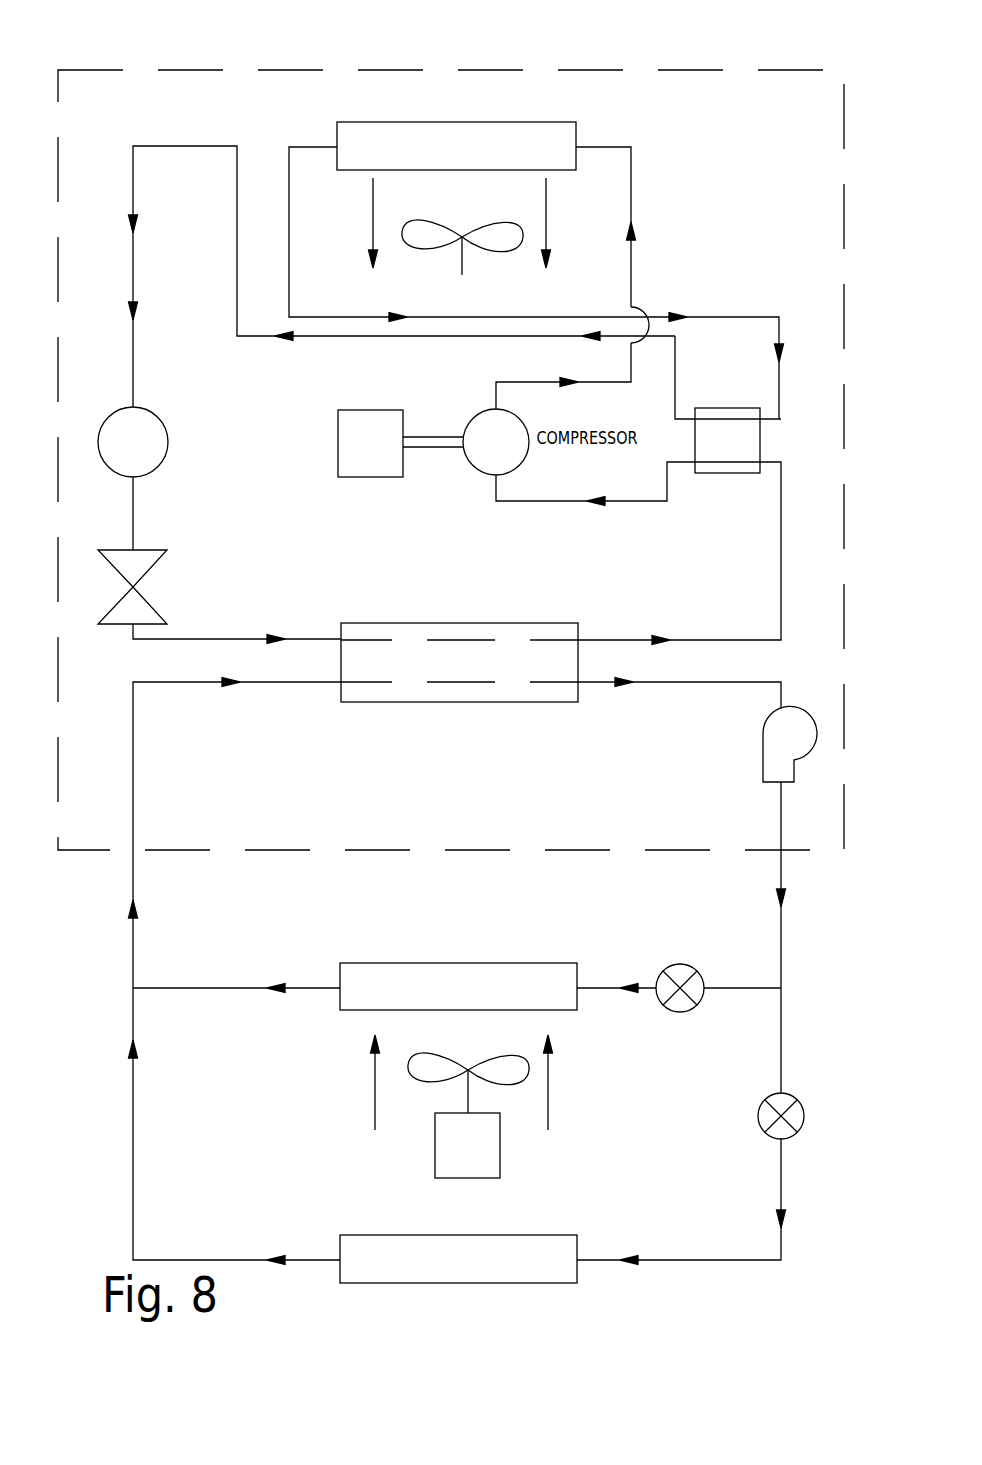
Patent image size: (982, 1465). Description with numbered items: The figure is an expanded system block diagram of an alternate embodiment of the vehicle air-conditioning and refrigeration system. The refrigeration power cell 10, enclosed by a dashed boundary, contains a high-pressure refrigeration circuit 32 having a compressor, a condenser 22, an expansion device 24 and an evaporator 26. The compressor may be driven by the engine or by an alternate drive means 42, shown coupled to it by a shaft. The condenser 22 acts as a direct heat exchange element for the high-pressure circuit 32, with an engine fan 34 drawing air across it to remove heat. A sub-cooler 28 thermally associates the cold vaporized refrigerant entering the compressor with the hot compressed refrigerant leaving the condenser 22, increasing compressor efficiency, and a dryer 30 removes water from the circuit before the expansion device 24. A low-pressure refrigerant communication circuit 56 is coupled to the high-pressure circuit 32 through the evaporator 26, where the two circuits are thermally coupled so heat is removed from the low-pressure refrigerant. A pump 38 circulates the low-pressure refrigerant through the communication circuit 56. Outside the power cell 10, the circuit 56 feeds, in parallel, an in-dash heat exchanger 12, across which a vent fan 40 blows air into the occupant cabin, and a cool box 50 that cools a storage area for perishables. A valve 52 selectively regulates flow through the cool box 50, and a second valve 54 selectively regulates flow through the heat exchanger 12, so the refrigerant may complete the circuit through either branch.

The refrigeration power cell 10 is at (228, 70).
The heat exchanger 12 is at (565, 963).
The condenser 22 is at (577, 140).
The expansion device 24 is at (153, 550).
The evaporator 26 is at (542, 623).
The sub-cooler 28 is at (726, 408).
The dryer 30 is at (150, 412).
The high-pressure refrigeration circuit 32 is at (182, 133).
The engine fan 34 is at (507, 242).
The pump 38 is at (764, 758).
The vent fan 40 is at (500, 1160).
The alternate drive means 42 is at (373, 477).
The cool box 50 is at (567, 1233).
The valve 52 is at (802, 1095).
The second valve 54 is at (678, 964).
The low-pressure refrigerant communication circuit 56 is at (842, 893).